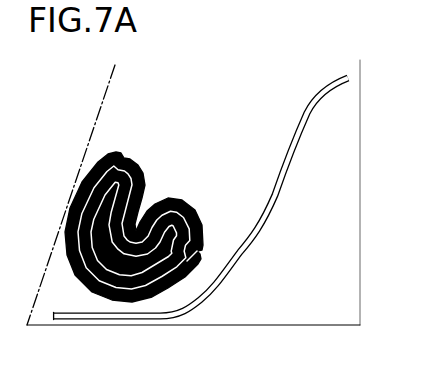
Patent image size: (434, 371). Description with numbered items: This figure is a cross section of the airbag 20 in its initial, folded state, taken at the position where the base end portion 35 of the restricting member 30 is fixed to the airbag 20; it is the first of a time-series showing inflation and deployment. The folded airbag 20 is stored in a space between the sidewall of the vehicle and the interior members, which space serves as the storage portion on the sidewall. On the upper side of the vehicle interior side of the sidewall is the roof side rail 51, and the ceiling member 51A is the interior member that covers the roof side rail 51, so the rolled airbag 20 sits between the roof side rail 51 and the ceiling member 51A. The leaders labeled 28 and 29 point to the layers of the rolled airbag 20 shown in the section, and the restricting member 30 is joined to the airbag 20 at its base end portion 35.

The airbag 20 is at (307, 255).
The first layer of strip 28 is at (195, 272).
The second layer of strip 29 is at (198, 246).
The restricting member 30 is at (130, 164).
The base end portion 35 is at (208, 236).
The roof side rail 51 is at (102, 97).
The ceiling member 51A is at (272, 203).